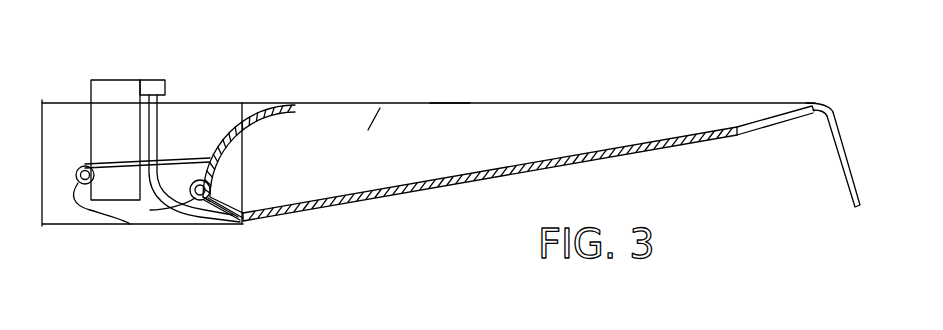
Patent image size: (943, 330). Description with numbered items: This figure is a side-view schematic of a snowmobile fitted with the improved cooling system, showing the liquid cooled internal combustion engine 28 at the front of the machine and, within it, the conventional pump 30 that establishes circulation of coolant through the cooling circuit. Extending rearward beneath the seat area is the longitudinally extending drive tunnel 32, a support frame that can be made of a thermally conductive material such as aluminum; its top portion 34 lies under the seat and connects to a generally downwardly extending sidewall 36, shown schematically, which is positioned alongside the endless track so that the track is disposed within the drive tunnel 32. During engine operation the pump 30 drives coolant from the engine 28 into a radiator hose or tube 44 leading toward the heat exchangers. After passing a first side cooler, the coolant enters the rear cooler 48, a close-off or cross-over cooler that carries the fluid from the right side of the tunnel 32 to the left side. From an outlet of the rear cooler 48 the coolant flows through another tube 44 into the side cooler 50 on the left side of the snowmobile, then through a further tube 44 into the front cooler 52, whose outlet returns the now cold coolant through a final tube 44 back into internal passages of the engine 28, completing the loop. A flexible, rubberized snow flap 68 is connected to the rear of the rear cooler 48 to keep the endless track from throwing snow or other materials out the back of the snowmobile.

The internal combustion engine 28 is at (108, 75).
The pump 30 is at (153, 86).
The drive tunnel 32 is at (370, 128).
The top portion 34 is at (499, 104).
The sidewall 36 is at (446, 116).
The radiator hose or tube 44 is at (168, 210).
The rear cooler 48 is at (818, 103).
The side cooler 50 is at (440, 192).
The front cooler 52 is at (263, 107).
The snow flap 68 is at (843, 150).